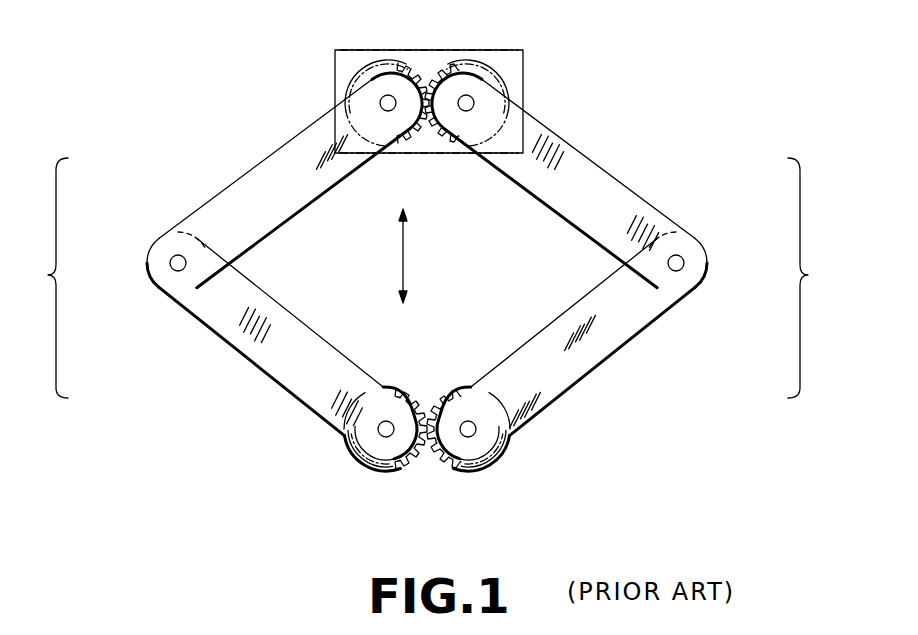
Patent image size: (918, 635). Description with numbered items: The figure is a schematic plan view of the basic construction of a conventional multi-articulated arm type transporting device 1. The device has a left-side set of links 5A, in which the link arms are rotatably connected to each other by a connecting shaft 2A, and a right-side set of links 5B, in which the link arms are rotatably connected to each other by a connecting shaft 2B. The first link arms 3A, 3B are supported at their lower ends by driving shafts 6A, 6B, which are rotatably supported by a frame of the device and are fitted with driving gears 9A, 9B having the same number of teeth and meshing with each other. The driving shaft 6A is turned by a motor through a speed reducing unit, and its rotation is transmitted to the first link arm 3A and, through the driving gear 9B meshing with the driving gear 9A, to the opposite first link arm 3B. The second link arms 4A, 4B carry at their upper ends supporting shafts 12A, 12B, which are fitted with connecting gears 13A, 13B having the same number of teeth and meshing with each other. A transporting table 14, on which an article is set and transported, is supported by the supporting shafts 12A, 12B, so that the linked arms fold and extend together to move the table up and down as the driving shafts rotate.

The multi-articulated arm type transporting device 1 is at (680, 120).
The connecting shaft 2A is at (170, 263).
The connecting shaft 2B is at (684, 263).
The first link arm 3A is at (205, 320).
The first link arm 3B is at (620, 320).
The second link arm 4A is at (220, 203).
The second link arm 4B is at (625, 205).
The left-side set of links 5A is at (36, 278).
The right-side set of links 5B is at (824, 278).
The driving shaft 6A is at (377, 430).
The driving shaft 6B is at (477, 430).
The driving gear 9A is at (345, 422).
The driving gear 9B is at (508, 422).
The supporting shaft 12A is at (380, 103).
The supporting shaft 12B is at (474, 103).
The connecting gear 13A is at (352, 80).
The connecting gear 13B is at (500, 78).
The transporting table 14 is at (432, 50).